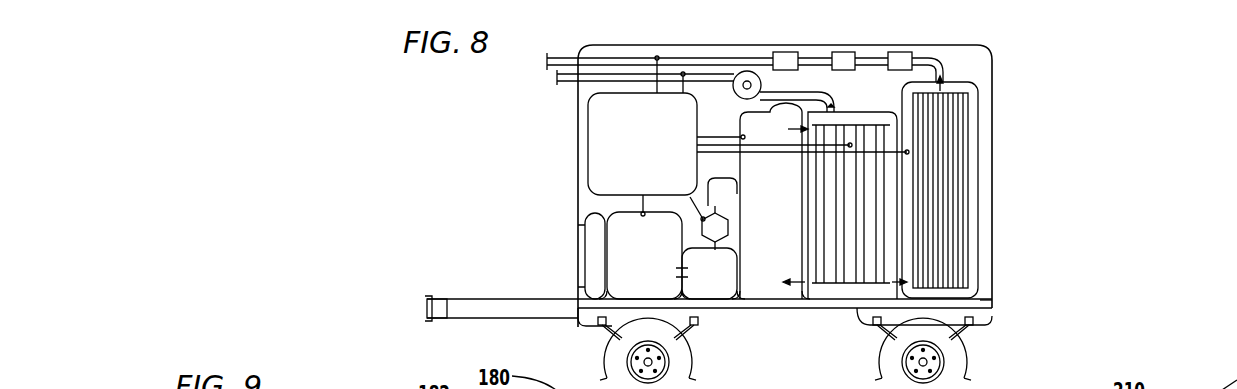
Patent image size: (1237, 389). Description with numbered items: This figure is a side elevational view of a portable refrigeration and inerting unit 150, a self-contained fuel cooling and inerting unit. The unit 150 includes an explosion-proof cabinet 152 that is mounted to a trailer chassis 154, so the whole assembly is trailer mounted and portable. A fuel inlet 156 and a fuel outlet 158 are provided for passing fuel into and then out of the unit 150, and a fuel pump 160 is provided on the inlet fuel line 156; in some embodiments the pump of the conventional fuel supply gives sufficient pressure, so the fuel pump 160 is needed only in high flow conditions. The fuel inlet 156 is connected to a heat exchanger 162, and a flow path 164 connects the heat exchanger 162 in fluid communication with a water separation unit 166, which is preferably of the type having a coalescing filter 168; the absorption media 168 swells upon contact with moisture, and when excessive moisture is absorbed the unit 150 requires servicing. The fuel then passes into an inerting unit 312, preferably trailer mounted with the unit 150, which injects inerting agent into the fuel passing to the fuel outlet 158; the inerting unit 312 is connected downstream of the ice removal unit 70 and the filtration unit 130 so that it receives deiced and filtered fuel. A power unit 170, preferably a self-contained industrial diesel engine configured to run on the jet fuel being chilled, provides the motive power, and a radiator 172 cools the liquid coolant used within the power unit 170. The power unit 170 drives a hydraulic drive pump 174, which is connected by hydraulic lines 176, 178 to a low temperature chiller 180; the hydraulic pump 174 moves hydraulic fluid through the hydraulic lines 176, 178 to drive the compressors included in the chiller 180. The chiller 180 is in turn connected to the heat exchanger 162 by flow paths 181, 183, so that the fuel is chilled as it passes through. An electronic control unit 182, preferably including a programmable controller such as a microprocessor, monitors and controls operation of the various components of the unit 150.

The portable refrigeration and inerting unit 150 is at (1002, 143).
The explosion-proof cabinet 152 is at (993, 202).
The trailer chassis 154 is at (498, 302).
The fuel inlet 156 is at (566, 85).
The fuel outlet 158 is at (551, 66).
The fuel pump 160 is at (735, 89).
The heat exchanger 162 is at (852, 112).
The flow path 164 is at (893, 286).
The water separation unit 166 is at (979, 230).
The coalescing filter 168 is at (958, 264).
The power unit 170 is at (614, 220).
The radiator 172 is at (590, 258).
The hydraulic drive pump 174 is at (719, 290).
The hydraulic line 176 is at (732, 203).
The hydraulic line 178 is at (730, 178).
The low temperature chiller 180 is at (758, 288).
The flow path 181 is at (780, 132).
The electronic control unit 182 is at (592, 132).
The flow path 183 is at (805, 285).
The inerting unit 312 is at (780, 52).
The filtration unit 130 is at (841, 52).
The ice removal unit 70 is at (907, 52).